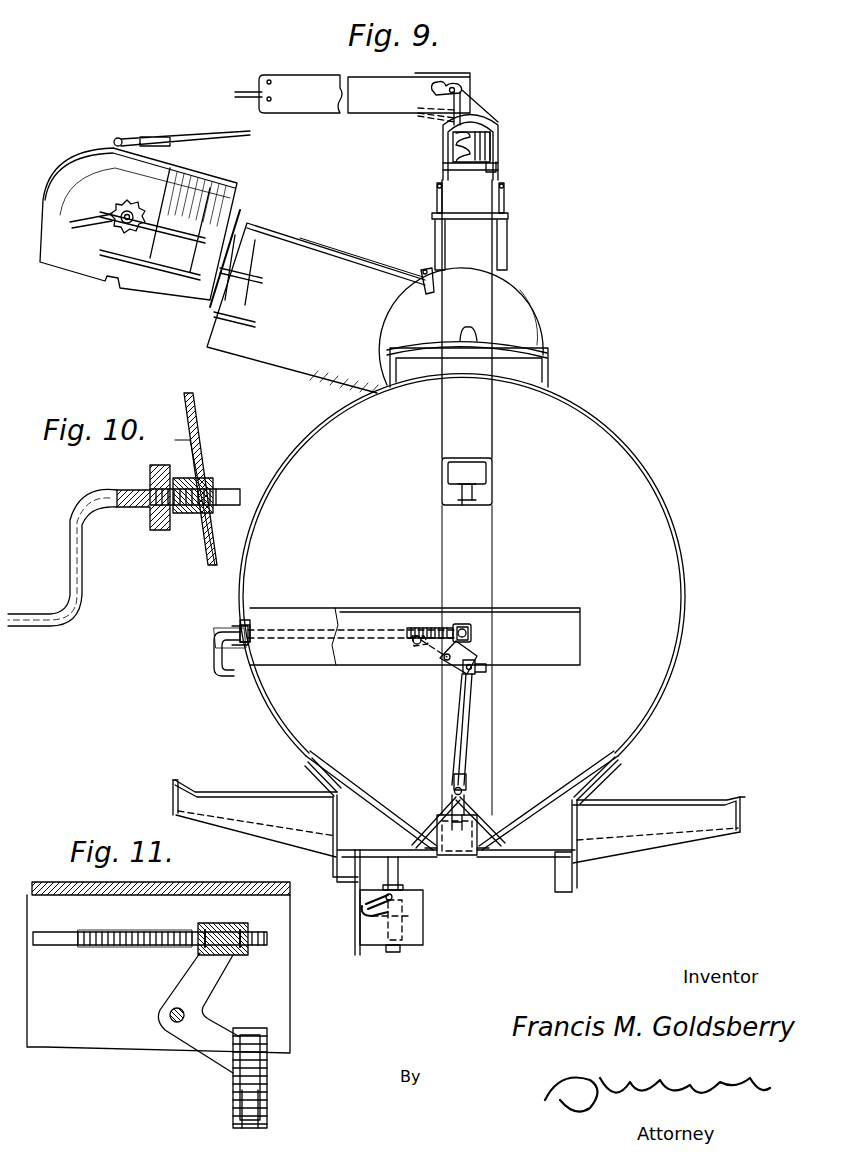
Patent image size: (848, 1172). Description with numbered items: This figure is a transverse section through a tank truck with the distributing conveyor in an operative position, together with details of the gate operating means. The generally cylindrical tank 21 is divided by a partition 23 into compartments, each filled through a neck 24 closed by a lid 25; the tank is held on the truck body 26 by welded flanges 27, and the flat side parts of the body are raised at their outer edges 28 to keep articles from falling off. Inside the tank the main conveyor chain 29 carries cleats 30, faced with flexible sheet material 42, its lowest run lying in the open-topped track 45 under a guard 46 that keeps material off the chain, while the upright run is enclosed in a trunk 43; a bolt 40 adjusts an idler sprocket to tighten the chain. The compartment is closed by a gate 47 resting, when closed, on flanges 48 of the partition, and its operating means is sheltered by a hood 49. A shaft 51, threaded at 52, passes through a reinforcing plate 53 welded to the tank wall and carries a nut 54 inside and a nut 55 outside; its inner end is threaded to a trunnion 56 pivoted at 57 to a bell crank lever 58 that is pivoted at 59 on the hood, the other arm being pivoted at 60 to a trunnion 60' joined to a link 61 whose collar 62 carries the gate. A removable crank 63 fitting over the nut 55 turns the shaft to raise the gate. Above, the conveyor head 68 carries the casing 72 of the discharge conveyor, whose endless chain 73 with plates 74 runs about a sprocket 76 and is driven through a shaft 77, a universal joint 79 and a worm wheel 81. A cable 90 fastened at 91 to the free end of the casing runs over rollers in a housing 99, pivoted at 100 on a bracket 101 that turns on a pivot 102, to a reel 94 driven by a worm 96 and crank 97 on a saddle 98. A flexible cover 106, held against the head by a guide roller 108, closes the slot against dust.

In FIG. 9, the tank 21 is at (681, 552).
In FIG. 10, the tank 21 is at (198, 414).
In FIG. 9, the partition 23 is at (616, 442).
In FIG. 9, the neck 24 is at (548, 377).
In FIG. 9, the lid 25 is at (530, 350).
In FIG. 9, the truck body 26 is at (229, 792).
In FIG. 9, the flange 27 is at (310, 772).
In FIG. 9, the raised outer edge 28 is at (173, 782).
In FIG. 9, the chain 29 is at (470, 505).
In FIG. 9, the cleat 30 is at (492, 476).
In FIG. 9, the bolt 40 is at (437, 192).
In FIG. 9, the flexible sheet facing 42 is at (492, 485).
In FIG. 9, the trunk 43 is at (492, 502).
In FIG. 9, the track 45 is at (420, 860).
In FIG. 9, the guard 46 is at (466, 795).
In FIG. 9, the gate 47 is at (426, 830).
In FIG. 9, the flange 48 is at (430, 850).
In FIG. 9, the hood 49 is at (534, 612).
In FIG. 11, the hood 49 is at (36, 882).
In FIG. 9, the shaft 51 is at (384, 628).
In FIG. 10, the shaft 51 is at (240, 495).
In FIG. 11, the shaft 51 is at (33, 940).
In FIG. 9, the threaded portion 52 is at (466, 628).
In FIG. 11, the threaded portion 52 is at (130, 948).
In FIG. 9, the reinforcing plate 53 is at (236, 628).
In FIG. 10, the reinforcing plate 53 is at (200, 550).
In FIG. 9, the nut 54 is at (252, 625).
In FIG. 10, the nut 54 is at (213, 512).
In FIG. 9, the nut 55 is at (240, 644).
In FIG. 10, the nut 55 is at (160, 530).
In FIG. 9, the trunnion 56 is at (456, 625).
In FIG. 11, the trunnion 56 is at (240, 924).
In FIG. 9, the pivot 57 is at (470, 636).
In FIG. 11, the pivot 57 is at (222, 924).
In FIG. 9, the bell crank lever 58 is at (448, 664).
In FIG. 11, the bell crank lever 58 is at (185, 975).
In FIG. 9, the pivot 59 is at (442, 660).
In FIG. 11, the pivot 59 is at (172, 1024).
In FIG. 9, the pivot 60 is at (486, 677).
In FIG. 11, the pivot 60 is at (271, 1078).
In FIG. 9, the trunnion 60' is at (513, 679).
In FIG. 11, the trunnion 60' is at (226, 1077).
In FIG. 9, the link 61 is at (466, 725).
In FIG. 11, the link 61 is at (238, 1124).
In FIG. 9, the collar 62 is at (468, 778).
In FIG. 9, the crank 63 is at (214, 650).
In FIG. 10, the crank 63 is at (83, 600).
In FIG. 9, the conveyor head 68 is at (512, 312).
In FIG. 9, the casing 72 is at (240, 195).
In FIG. 9, the endless chain 73 is at (234, 226).
In FIG. 9, the plate 74 is at (212, 190).
In FIG. 9, the sprocket 76 is at (143, 222).
In FIG. 9, the shaft 77 is at (366, 899).
In FIG. 9, the universal joint 79 is at (364, 916).
In FIG. 9, the worm wheel 81 is at (412, 923).
In FIG. 9, the cable 90 is at (246, 99).
In FIG. 9, the cable fastening 91 is at (120, 138).
In FIG. 9, the reel 94 is at (496, 172).
In FIG. 9, the worm 96 is at (455, 146).
In FIG. 9, the crank 97 is at (456, 122).
In FIG. 9, the saddle 98 is at (457, 178).
In FIG. 9, the housing 99 is at (305, 80).
In FIG. 9, the pivot 100 is at (462, 92).
In FIG. 9, the bracket 101 is at (480, 106).
In FIG. 9, the pivot 102 is at (496, 120).
In FIG. 9, the flexible cover 106 is at (376, 258).
In FIG. 9, the guide roller 108 is at (424, 270).